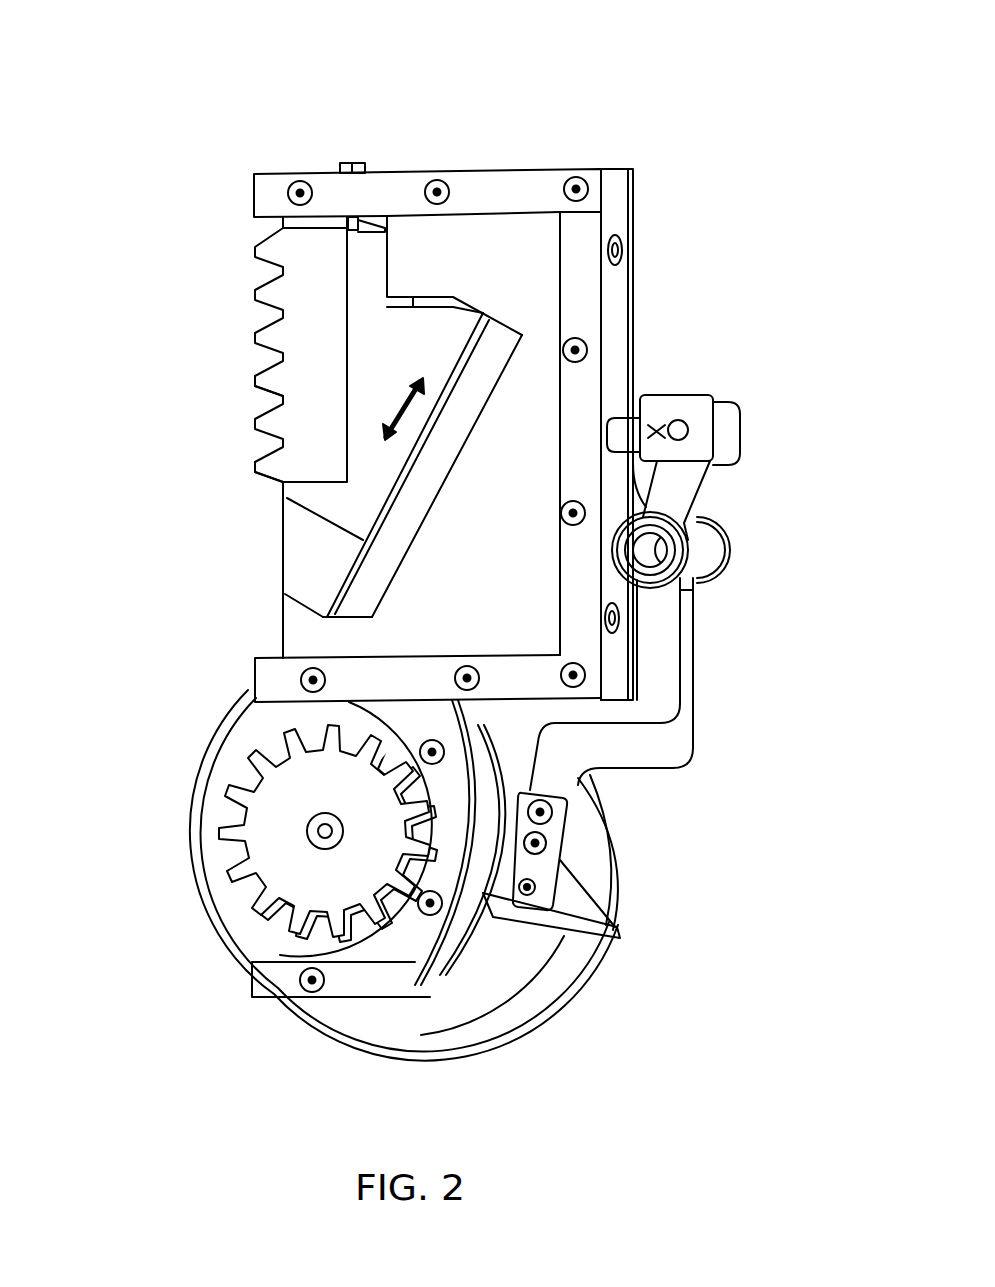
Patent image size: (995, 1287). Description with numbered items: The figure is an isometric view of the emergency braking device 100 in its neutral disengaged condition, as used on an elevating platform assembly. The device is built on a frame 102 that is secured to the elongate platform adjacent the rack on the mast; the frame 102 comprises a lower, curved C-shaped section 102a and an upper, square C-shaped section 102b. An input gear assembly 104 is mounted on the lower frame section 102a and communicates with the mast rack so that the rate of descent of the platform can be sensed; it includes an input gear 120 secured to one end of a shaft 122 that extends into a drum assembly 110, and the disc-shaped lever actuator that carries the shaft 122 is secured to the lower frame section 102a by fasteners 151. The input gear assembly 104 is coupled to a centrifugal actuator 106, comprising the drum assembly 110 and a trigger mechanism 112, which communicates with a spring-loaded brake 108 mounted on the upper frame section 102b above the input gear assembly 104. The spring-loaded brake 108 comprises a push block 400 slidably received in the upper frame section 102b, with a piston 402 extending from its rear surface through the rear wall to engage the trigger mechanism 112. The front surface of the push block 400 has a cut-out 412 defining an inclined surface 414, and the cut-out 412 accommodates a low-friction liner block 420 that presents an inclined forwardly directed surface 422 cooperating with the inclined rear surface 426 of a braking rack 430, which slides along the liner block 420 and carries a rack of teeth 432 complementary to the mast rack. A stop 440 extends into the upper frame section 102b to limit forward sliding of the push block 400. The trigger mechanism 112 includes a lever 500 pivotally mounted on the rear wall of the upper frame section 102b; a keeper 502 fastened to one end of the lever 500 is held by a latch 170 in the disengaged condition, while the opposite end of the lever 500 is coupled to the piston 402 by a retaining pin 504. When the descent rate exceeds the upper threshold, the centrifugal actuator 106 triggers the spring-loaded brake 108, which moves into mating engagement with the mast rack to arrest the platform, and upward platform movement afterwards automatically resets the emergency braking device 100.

The emergency braking device 100 is at (543, 146).
The frame 102 is at (688, 270).
The lower, curved C-shaped frame section 102a is at (397, 955).
The upper, square C-shaped frame section 102b is at (584, 383).
The input gear assembly 104 is at (215, 824).
The centrifugal actuator 106 is at (672, 851).
The spring-loaded brake 108 is at (228, 265).
The drum assembly 110 is at (578, 1010).
The trigger mechanism 112 is at (712, 724).
The input gear 120 is at (247, 882).
The shaft 122 is at (328, 815).
The fasteners 151 is at (417, 717).
The latch 170 is at (620, 927).
The push block 400 is at (307, 645).
The piston 402 is at (620, 445).
The cut-out 412 is at (410, 338).
The inclined surface 414 is at (440, 470).
The liner block 420 is at (363, 577).
The inclined forwardly directed surface 422 is at (372, 617).
The inclined rear surface 426 is at (472, 345).
The braking rack 430 is at (308, 423).
The rack of teeth 432 is at (258, 383).
The stop 440 is at (354, 219).
The lever 500 is at (660, 657).
The keeper 502 is at (542, 867).
The retaining pin 504 is at (683, 420).